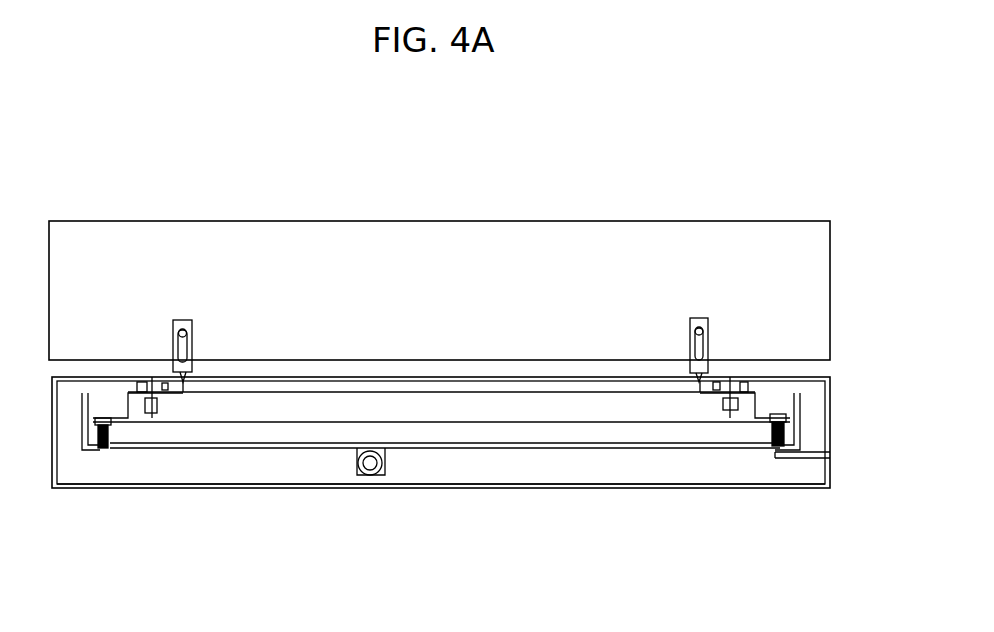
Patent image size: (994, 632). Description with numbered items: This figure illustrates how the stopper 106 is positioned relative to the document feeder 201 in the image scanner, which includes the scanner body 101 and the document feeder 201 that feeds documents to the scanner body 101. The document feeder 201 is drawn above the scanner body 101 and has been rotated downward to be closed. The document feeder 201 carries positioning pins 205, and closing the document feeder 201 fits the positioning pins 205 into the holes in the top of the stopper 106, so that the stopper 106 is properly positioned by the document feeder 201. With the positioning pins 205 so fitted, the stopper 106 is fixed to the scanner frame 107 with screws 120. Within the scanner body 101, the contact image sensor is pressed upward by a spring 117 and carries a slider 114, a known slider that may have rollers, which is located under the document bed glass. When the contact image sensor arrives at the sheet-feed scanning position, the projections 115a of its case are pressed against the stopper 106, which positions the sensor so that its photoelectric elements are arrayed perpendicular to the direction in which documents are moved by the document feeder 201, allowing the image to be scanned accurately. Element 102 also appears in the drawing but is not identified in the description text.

The document feeder 201 is at (305, 208).
The scanner body 101 is at (672, 500).
The scanner frame 107 is at (62, 488).
The positioning pins 205 is at (160, 393).
The stopper 106 is at (723, 392).
The slider 114 is at (132, 393).
The projections 115a is at (153, 412).
The spring 117 is at (102, 445).
The screws 120 is at (165, 378).
The roller 102 is at (363, 478).